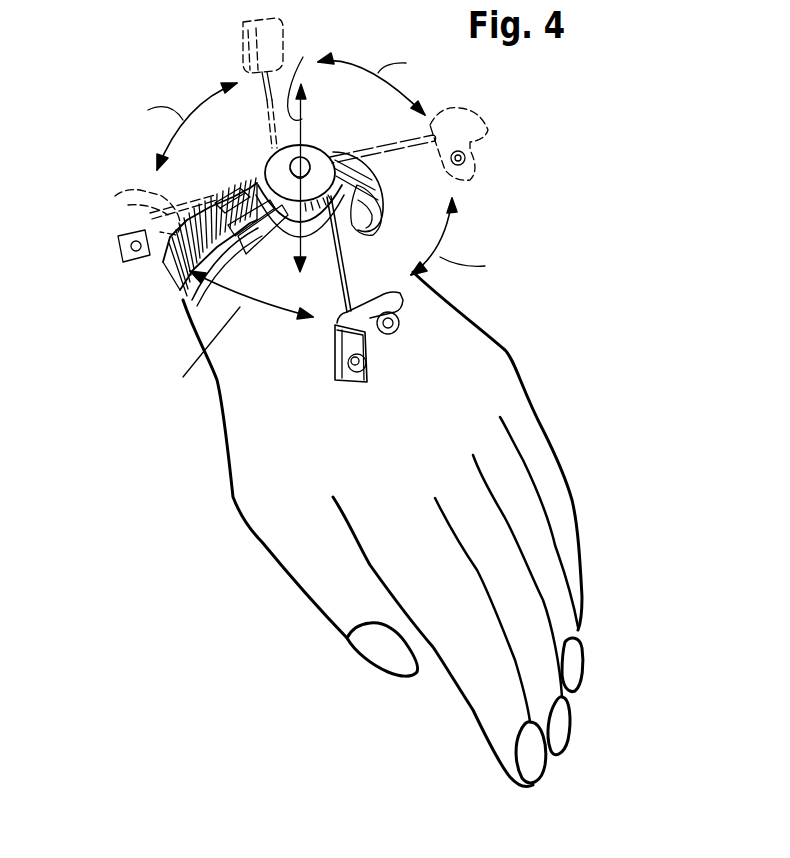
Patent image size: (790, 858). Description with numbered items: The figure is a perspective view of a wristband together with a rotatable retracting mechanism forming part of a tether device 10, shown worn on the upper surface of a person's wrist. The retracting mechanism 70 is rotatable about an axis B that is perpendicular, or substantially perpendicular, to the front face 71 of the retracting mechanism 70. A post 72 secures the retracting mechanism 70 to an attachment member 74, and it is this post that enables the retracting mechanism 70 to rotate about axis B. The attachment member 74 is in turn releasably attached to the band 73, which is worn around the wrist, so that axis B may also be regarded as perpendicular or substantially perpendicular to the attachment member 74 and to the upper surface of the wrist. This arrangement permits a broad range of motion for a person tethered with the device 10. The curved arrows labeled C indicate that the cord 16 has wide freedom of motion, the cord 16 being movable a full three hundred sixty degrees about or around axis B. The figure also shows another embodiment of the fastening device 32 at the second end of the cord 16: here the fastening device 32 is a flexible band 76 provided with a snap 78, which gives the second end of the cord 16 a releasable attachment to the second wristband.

The tether device 10 is at (167, 63).
The cord 16 is at (252, 197).
The fastening device 32 is at (315, 367).
The retracting mechanism 70 is at (273, 173).
The front face 71 is at (317, 157).
The post 72 is at (290, 143).
The band 73 is at (340, 222).
The attachment member 74 is at (370, 238).
The flexible band 76 is at (343, 345).
The snap 78 is at (367, 358).